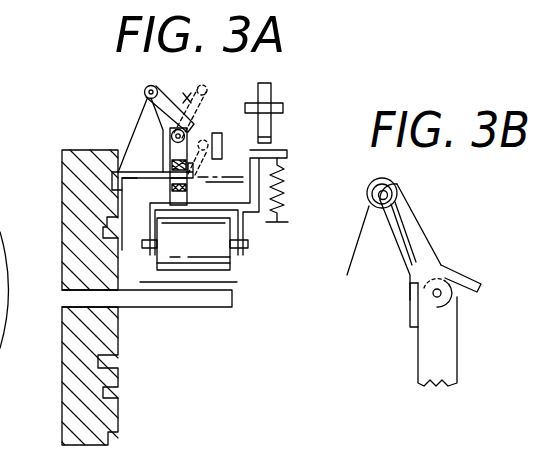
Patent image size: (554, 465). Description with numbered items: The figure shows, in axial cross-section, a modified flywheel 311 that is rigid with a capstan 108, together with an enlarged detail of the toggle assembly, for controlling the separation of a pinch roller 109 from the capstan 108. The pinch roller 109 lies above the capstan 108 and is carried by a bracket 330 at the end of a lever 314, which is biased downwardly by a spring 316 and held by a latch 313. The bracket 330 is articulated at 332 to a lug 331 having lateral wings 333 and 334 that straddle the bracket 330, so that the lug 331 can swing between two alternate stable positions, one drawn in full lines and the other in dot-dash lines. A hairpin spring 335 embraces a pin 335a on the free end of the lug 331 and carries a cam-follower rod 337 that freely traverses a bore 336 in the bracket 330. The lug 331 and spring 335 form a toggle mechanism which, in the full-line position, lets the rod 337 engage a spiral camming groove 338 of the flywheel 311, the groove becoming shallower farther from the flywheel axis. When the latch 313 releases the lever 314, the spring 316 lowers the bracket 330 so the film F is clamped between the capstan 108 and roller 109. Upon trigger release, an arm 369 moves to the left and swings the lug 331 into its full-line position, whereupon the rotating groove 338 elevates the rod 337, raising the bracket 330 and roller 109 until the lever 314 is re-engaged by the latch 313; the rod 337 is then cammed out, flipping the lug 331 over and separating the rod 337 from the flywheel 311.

In FIG. 3A, the flywheel 311 is at (85, 405).
In FIG. 3A, the capstan 108 is at (206, 304).
In FIG. 3A, the film F is at (236, 286).
In FIG. 3A, the spiral camming groove 338 is at (112, 174).
In FIG. 3A, the cam-follower rod 337 is at (137, 178).
In FIG. 3A, the bracket 330 is at (188, 198).
In FIG. 3B, the bracket 330 is at (433, 348).
In FIG. 3A, the lug 331 is at (160, 104).
In FIG. 3B, the lug 331 is at (410, 217).
In FIG. 3A, the hairpin spring 335 is at (143, 125).
In FIG. 3B, the hairpin spring 335 is at (363, 256).
In FIG. 3A, the bore 336 is at (168, 170).
In FIG. 3A, the arm 369 is at (218, 133).
In FIG. 3A, the latch 313 is at (268, 128).
In FIG. 3A, the lever 314 is at (285, 150).
In FIG. 3A, the spring 316 is at (280, 190).
In FIG. 3A, the pinch roller 109 is at (208, 258).
In FIG. 3B, the pin 335a is at (397, 183).
In FIG. 3B, the articulation 332 is at (452, 297).
In FIG. 3B, the lateral wing 334 is at (473, 276).
In FIG. 3B, the lateral wing 333 is at (412, 313).